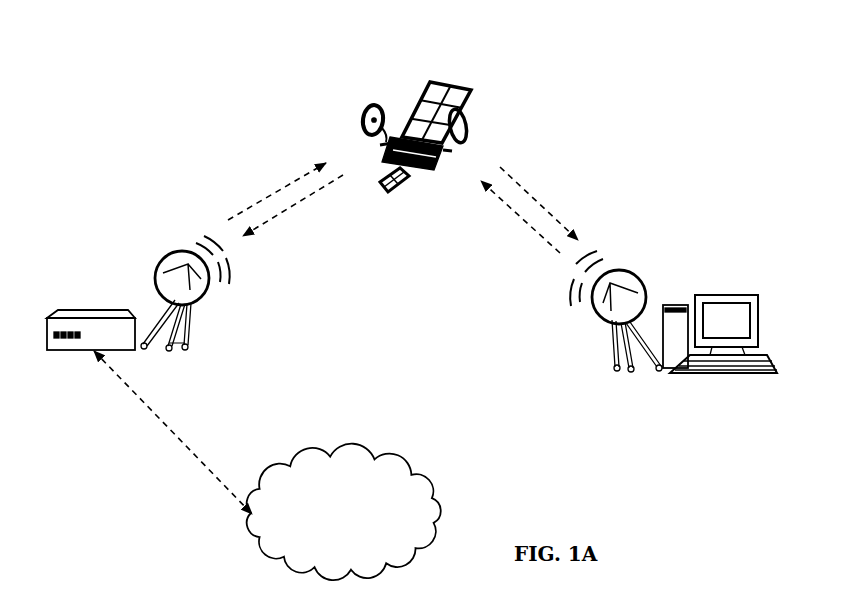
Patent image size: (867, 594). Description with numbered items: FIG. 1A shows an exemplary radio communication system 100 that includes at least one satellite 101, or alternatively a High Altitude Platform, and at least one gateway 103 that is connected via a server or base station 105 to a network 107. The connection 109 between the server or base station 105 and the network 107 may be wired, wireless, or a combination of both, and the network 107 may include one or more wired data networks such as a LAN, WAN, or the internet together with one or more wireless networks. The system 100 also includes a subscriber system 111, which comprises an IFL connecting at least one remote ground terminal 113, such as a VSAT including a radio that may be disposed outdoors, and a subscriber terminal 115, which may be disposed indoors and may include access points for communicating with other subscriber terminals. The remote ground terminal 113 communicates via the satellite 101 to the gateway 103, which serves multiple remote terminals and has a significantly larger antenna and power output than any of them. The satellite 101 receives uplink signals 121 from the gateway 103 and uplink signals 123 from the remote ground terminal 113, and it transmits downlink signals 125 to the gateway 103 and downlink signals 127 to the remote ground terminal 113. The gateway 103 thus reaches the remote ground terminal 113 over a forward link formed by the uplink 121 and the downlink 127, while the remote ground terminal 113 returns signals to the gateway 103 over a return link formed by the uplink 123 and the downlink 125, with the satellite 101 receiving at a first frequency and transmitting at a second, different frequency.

The system 100 is at (165, 144).
The satellite 101 is at (427, 137).
The gateway 103 is at (163, 293).
The server or base station 105 is at (88, 321).
The network 107 is at (349, 512).
The connection 109 is at (173, 432).
The subscriber system 111 is at (630, 287).
The remote ground terminal 113 is at (627, 346).
The subscriber terminal 115 is at (725, 334).
The uplink signals 121 is at (277, 191).
The uplink signals 123 is at (520, 217).
The downlink signals 125 is at (293, 205).
The downlink signals 127 is at (539, 203).